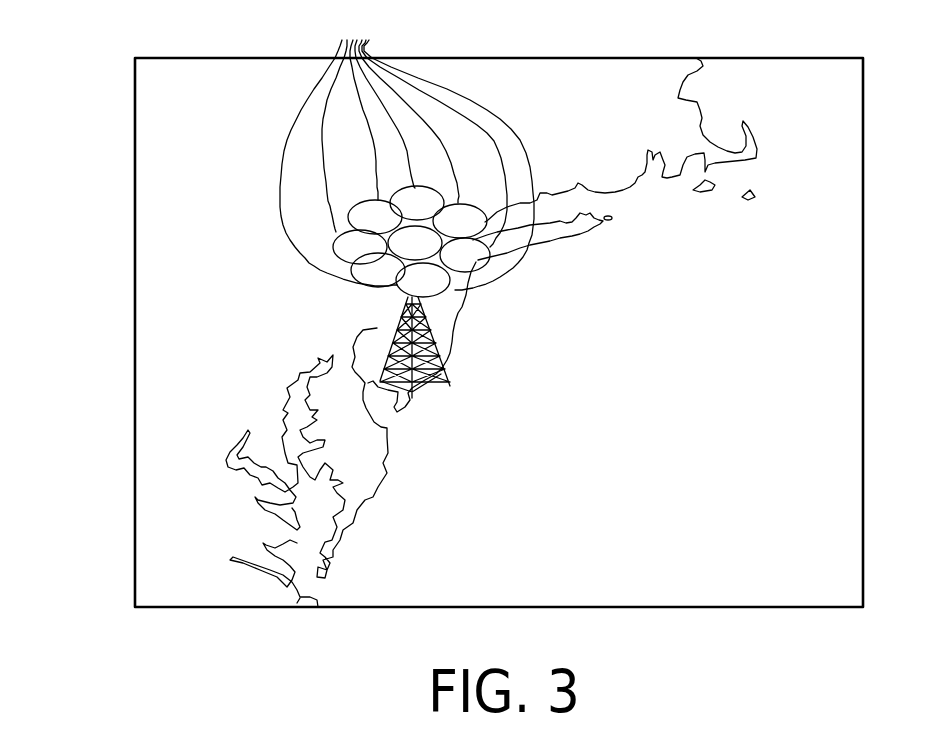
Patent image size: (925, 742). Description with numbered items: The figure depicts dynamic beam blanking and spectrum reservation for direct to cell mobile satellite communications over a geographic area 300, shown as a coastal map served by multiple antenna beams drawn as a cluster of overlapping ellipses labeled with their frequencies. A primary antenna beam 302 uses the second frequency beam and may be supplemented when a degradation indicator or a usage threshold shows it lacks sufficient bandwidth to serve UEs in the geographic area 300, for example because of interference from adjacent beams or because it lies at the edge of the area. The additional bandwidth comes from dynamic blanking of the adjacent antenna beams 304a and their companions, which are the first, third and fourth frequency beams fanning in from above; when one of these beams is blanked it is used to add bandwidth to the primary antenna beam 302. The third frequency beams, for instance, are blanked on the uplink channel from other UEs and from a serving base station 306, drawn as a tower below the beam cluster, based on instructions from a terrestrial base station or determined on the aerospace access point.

The geographic area 300 is at (62, 86).
The primary antenna beam 302 is at (398, 250).
The adjacent antenna beams 304a is at (383, 152).
The serving base station 306 is at (443, 360).